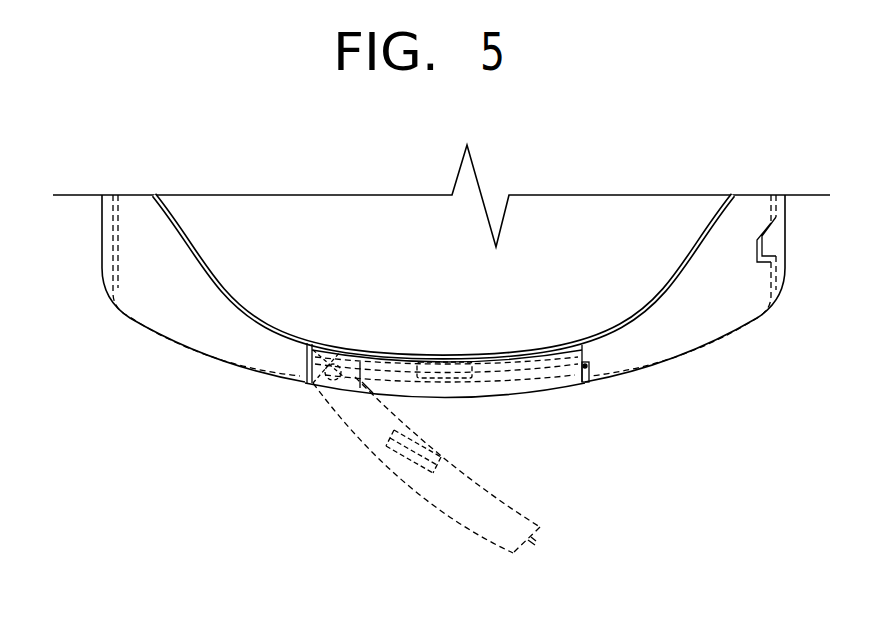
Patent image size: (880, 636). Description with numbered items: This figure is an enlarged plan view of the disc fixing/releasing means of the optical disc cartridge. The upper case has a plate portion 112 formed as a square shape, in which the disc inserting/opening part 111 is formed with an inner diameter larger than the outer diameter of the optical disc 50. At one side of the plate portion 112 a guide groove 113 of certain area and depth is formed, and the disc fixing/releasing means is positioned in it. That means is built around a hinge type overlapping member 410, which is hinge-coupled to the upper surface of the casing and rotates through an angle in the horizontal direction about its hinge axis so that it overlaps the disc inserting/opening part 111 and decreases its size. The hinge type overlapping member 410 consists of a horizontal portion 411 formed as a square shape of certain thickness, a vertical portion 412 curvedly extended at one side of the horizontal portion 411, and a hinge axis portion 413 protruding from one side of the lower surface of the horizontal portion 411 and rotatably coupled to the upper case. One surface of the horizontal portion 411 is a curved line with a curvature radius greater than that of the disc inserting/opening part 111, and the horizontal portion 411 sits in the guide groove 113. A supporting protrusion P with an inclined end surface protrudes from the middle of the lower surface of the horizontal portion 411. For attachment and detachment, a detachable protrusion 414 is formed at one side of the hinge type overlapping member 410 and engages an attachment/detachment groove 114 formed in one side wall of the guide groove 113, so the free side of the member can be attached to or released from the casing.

The optical disc 50 is at (694, 263).
The disc inserting/opening part 111 is at (248, 300).
The plate portion 112 is at (128, 250).
The guide groove 113 is at (307, 370).
The attachment/detachment groove 114 is at (585, 367).
The hinge type overlapping member 410 is at (475, 396).
The horizontal portion 411 is at (445, 390).
The vertical portion 412 is at (373, 393).
The hinge axis portion 413 is at (313, 383).
The detachable protrusion 414 is at (585, 365).
The supporting protrusion P is at (430, 380).